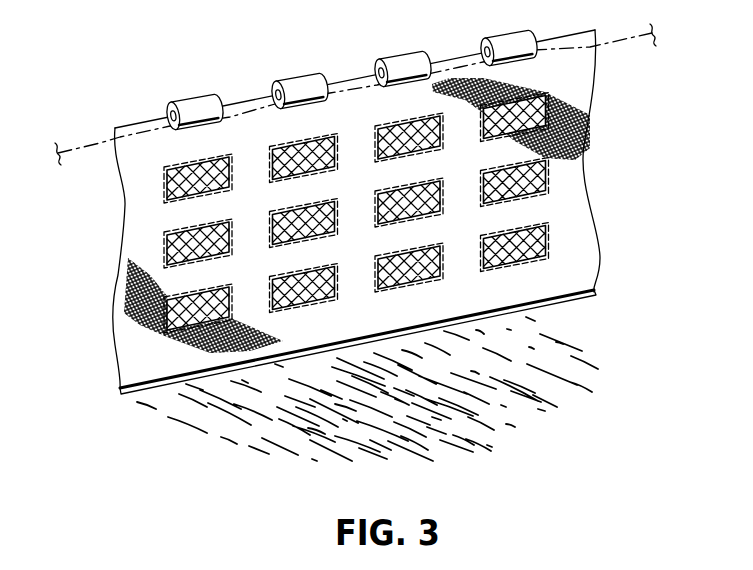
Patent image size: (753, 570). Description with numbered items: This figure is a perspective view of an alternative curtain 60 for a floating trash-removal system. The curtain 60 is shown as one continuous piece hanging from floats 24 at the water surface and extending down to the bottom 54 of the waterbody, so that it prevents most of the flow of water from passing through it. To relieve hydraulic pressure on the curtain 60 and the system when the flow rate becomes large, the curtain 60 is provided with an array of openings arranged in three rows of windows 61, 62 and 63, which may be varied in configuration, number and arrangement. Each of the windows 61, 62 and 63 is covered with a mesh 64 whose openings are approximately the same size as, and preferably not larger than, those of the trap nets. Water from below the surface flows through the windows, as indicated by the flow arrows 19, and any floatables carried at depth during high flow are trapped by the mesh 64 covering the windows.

The arrows 19 is at (492, 298).
The floats 24 is at (197, 100).
The bottom of the waterbody 54 is at (436, 427).
The curtain 60 is at (362, 194).
The windows (first row) 61 is at (552, 100).
The windows (second row) 62 is at (495, 203).
The windows (third row) 63 is at (550, 250).
The mesh 64 is at (542, 162).